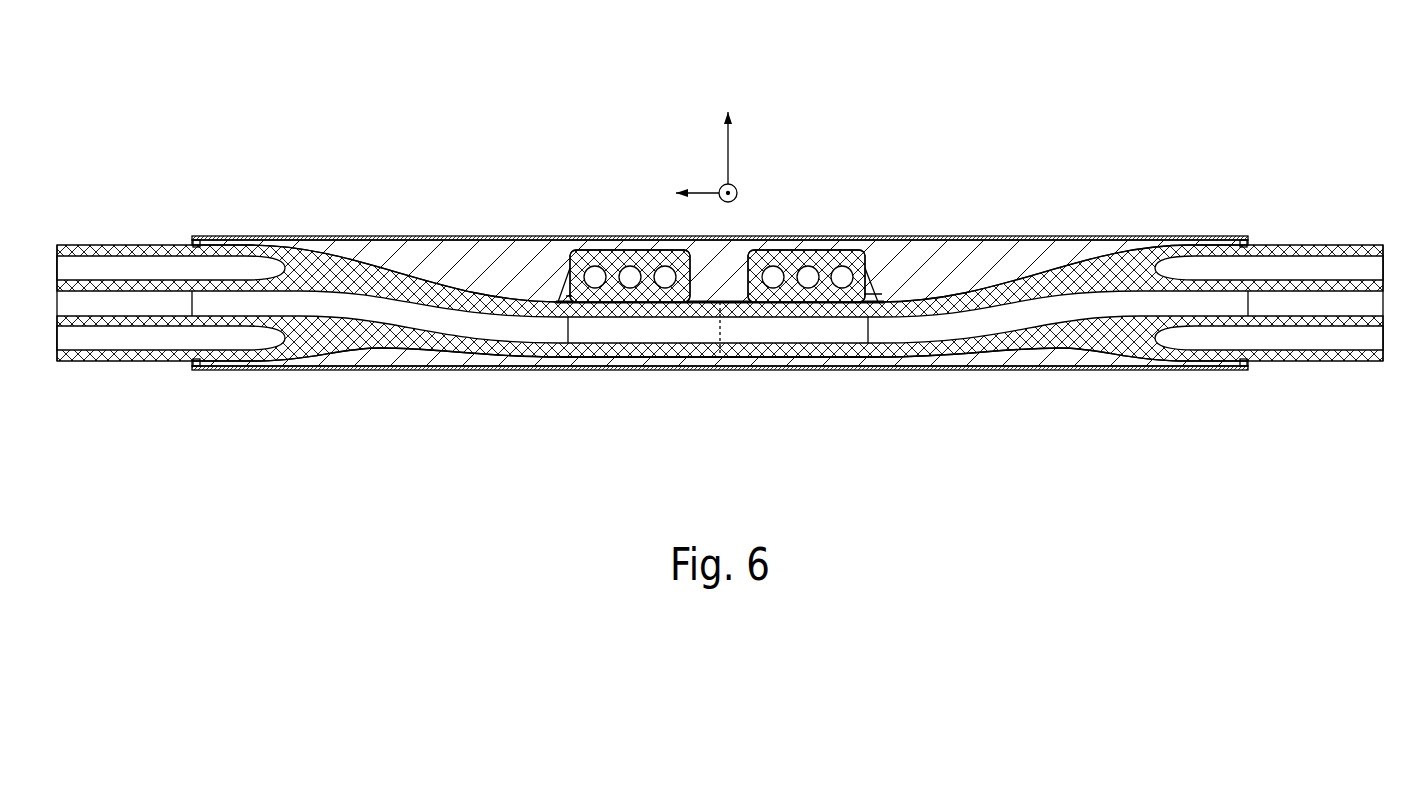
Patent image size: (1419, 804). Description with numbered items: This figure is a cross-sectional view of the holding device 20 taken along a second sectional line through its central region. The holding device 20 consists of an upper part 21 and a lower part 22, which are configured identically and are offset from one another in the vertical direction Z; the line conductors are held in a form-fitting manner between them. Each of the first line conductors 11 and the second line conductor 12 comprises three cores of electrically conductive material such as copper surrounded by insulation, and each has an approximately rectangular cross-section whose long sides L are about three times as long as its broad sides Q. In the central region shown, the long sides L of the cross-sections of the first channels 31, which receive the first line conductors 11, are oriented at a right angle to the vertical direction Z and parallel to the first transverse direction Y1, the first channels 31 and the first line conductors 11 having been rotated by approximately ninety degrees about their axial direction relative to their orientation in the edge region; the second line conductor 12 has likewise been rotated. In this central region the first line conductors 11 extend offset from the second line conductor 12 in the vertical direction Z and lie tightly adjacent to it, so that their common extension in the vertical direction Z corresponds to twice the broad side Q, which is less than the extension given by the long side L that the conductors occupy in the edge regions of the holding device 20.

The holding device 20 is at (343, 183).
The upper part 21 is at (1053, 250).
The lower part 22 is at (1055, 355).
The second line conductor 12 is at (305, 308).
The first line conductors 11 is at (785, 300).
The first channels 31 is at (620, 248).
The broad sides Q is at (562, 300).
The long sides L is at (572, 250).
The first transverse direction Y1 is at (702, 193).
The vertical direction Z is at (728, 145).